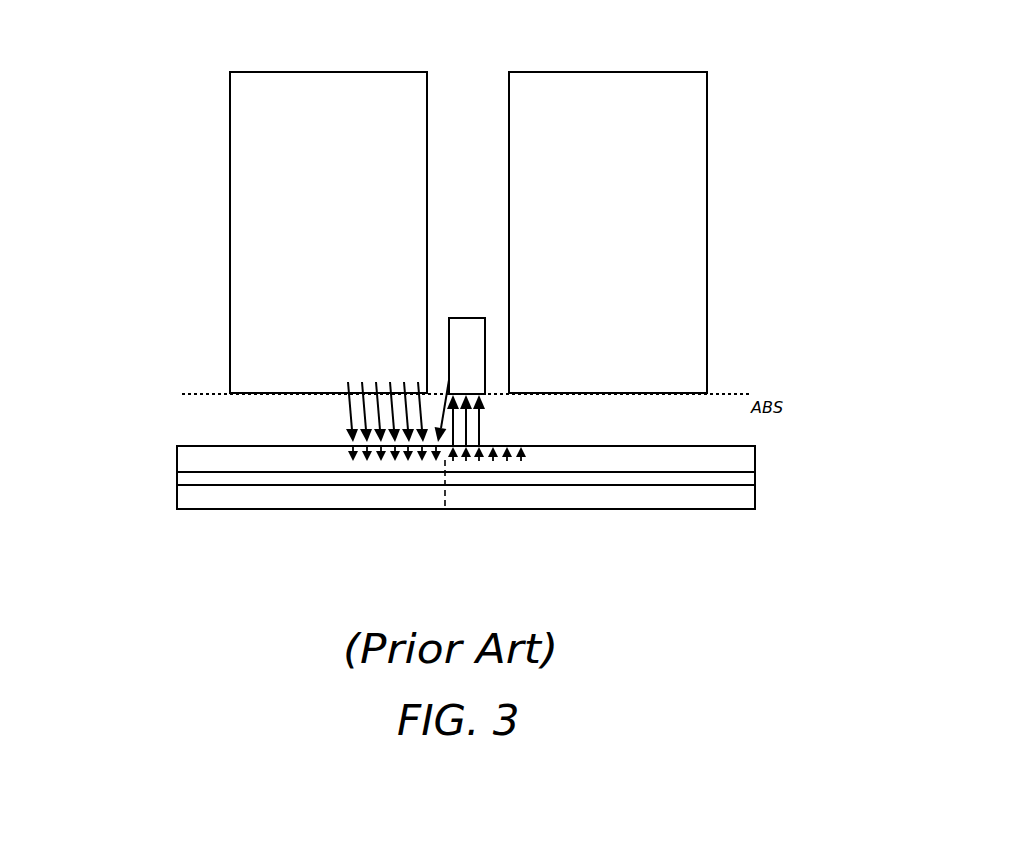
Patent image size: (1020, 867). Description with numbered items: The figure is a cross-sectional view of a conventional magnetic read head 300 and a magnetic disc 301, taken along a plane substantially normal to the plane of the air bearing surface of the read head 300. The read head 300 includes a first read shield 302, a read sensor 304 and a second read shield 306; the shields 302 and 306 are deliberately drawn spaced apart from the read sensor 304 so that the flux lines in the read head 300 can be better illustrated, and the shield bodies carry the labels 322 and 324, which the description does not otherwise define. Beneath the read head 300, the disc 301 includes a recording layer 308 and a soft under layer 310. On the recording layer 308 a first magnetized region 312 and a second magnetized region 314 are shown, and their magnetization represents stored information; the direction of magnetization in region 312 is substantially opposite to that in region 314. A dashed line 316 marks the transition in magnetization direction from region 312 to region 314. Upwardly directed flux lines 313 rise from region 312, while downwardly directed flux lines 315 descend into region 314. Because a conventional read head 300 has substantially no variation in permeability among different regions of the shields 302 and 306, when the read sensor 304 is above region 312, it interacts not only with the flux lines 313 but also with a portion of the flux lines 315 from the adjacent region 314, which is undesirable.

The magnetic read head 300 is at (745, 183).
The magnetic disc 301 is at (138, 466).
The first read shield 302 is at (427, 72).
The read sensor 304 is at (473, 322).
The second read shield 306 is at (707, 72).
The recording layer 308 is at (177, 450).
The soft under layer 310 is at (185, 497).
The first magnetized region 312 is at (504, 473).
The upwardly directed flux lines 313 is at (510, 418).
The second magnetized region 314 is at (396, 477).
The downwardly directed flux lines 315 is at (336, 427).
The dashed line 316 is at (445, 510).
The first return pole body 322 is at (330, 217).
The second return pole body 324 is at (615, 217).